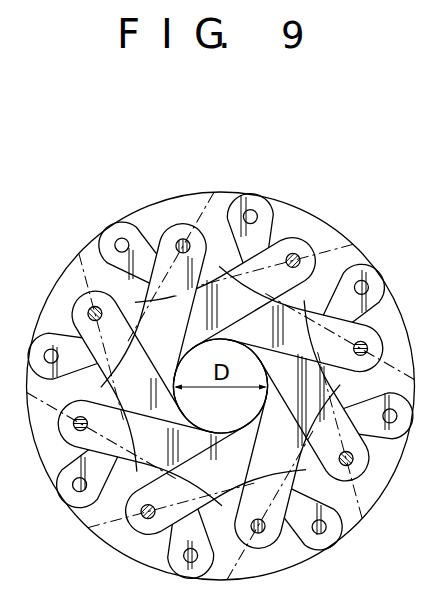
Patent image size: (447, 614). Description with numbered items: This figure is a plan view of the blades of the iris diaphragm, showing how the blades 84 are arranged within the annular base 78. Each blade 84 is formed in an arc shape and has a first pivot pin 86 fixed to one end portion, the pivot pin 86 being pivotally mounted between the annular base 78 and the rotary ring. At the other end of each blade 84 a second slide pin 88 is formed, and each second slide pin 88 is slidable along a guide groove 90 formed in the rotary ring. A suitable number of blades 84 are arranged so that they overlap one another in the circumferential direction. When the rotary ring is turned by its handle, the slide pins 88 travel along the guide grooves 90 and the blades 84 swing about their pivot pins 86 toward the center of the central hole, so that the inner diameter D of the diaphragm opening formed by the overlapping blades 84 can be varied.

The annular base 78 is at (348, 238).
The second slide pin 88 is at (306, 240).
The guide groove 90 is at (363, 484).
The first pivot pin 86 is at (75, 488).
The blade 84 is at (170, 547).